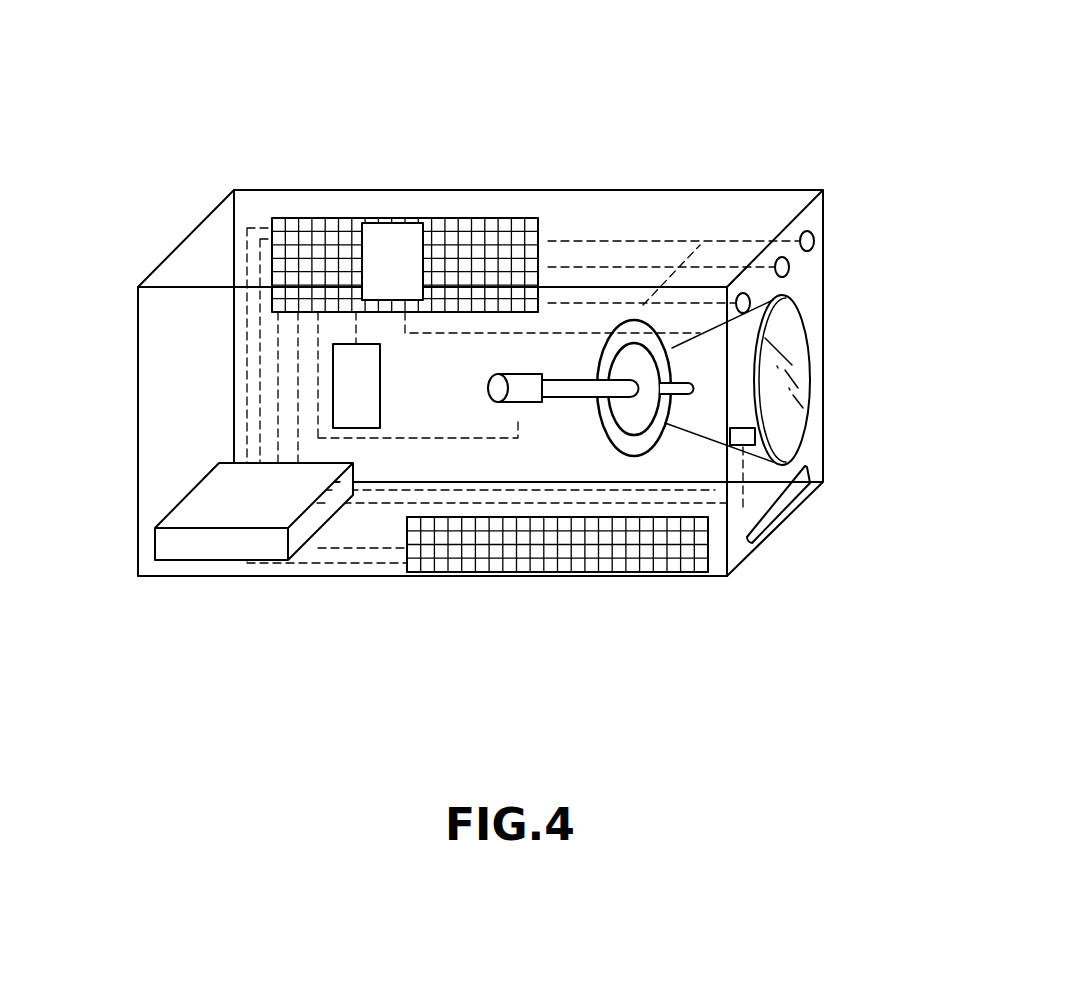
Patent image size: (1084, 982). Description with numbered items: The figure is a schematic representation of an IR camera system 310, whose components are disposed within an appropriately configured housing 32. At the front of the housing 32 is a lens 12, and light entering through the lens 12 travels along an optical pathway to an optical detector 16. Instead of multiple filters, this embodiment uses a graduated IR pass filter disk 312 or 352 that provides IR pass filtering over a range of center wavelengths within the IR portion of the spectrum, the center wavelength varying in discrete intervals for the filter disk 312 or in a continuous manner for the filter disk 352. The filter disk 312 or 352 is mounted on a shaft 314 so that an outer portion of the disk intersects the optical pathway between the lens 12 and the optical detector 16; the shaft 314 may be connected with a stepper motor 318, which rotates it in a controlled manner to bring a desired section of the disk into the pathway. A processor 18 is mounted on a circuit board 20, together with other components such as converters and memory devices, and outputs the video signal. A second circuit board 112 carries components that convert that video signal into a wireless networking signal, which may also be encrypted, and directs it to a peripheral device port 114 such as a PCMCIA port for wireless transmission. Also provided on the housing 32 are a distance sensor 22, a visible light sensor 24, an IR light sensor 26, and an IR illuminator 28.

The IR camera system 310 is at (650, 88).
The processor 18 is at (396, 238).
The circuit board 20 is at (493, 218).
The optical detector 16 is at (380, 378).
The graduated IR pass filter disk 312 is at (544, 388).
The graduated IR pass filter disk 352 is at (630, 372).
The shaft 314 is at (575, 400).
The stepper motor 318 is at (512, 392).
The lens 12 is at (793, 372).
The distance sensor 22 is at (814, 240).
The visible light sensor 24 is at (790, 266).
The IR light sensor 26 is at (751, 301).
The IR illuminator 28 is at (790, 488).
The second circuit board 112 is at (605, 572).
The peripheral device port 114 is at (155, 522).
The housing 32 is at (355, 577).